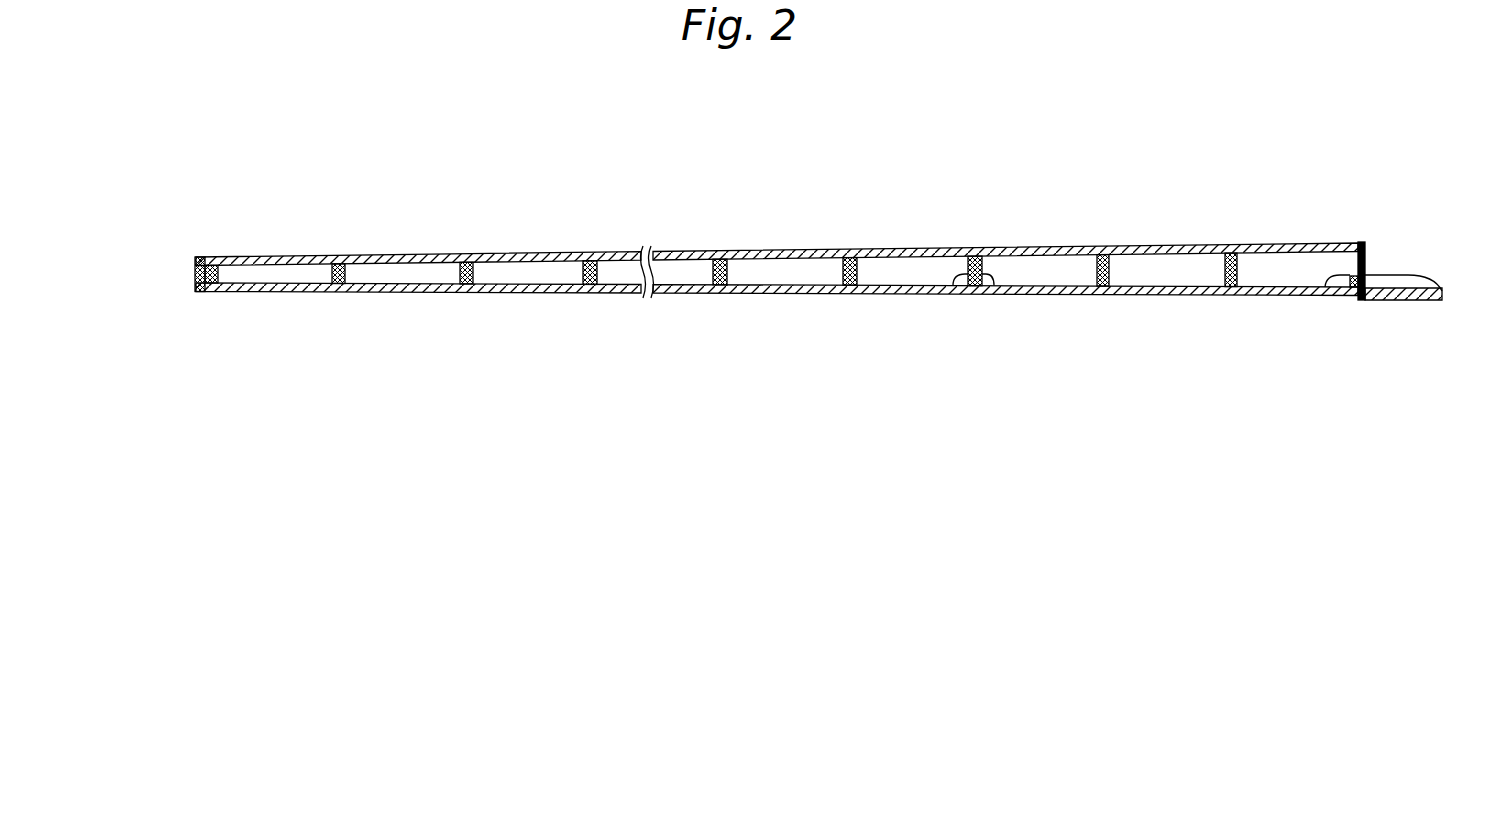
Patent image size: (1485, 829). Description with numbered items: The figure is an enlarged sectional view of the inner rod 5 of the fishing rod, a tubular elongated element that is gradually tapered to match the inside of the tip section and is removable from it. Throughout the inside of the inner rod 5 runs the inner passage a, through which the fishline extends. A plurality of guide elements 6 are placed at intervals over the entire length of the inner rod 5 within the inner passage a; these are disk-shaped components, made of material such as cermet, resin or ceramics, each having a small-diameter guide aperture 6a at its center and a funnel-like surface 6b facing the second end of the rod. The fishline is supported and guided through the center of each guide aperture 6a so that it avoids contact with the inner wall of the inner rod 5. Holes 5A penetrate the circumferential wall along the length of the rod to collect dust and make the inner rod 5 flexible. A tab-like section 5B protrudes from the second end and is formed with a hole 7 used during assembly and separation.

The inner rod 5 is at (805, 255).
The holes 5A is at (423, 292).
The tab-like section 5B is at (1420, 275).
The guide elements 6 is at (193, 275).
The guide aperture 6a is at (977, 272).
The funnel-like surface 6b is at (992, 282).
The hole 7 is at (1412, 300).
The inner passage a is at (1362, 264).